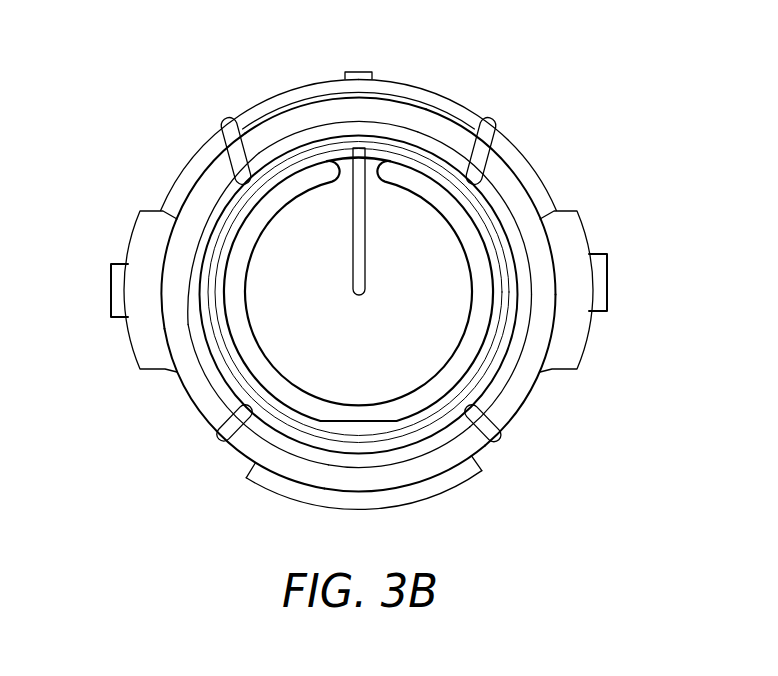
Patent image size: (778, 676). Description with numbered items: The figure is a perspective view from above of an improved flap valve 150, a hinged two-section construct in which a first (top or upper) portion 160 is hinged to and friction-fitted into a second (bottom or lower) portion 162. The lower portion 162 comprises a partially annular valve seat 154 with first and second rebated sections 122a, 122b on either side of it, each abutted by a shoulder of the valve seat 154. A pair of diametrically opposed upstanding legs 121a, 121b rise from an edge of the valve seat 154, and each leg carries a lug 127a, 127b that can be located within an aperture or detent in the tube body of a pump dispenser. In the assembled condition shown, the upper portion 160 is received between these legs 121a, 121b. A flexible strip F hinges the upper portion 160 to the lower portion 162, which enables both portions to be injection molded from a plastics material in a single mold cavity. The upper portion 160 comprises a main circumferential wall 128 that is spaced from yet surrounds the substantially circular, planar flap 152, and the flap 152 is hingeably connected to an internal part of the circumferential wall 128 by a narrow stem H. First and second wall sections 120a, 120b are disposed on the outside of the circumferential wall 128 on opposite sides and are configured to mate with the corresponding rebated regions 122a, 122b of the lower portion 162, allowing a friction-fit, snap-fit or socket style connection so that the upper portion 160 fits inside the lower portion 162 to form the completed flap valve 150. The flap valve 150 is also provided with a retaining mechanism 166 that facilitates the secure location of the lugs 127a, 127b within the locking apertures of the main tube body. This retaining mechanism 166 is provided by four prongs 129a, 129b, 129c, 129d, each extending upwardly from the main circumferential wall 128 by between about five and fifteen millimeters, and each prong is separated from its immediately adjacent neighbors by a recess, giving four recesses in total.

The first wall section 120a is at (317, 82).
The second wall section 120b is at (253, 487).
The upstanding leg 121a is at (128, 290).
The upstanding leg 121b is at (588, 290).
The lug 127a is at (111, 306).
The lug 127b is at (608, 311).
The prong 129a is at (204, 192).
The prong 129b is at (283, 127).
The prong 129c is at (518, 392).
The prong 129d is at (435, 465).
The first rebated section 122a is at (495, 137).
The second rebated section 122b is at (498, 452).
The first (top or upper) portion 160 is at (219, 180).
The retaining mechanism 166 is at (178, 382).
The second (bottom or lower) portion 162 is at (564, 196).
The flap valve 150 is at (163, 436).
The main circumferential wall 128 is at (481, 208).
The partially annular valve seat 154 is at (412, 183).
The flap 152 is at (370, 347).
The narrow stem H is at (360, 147).
The flexible strip F is at (351, 71).